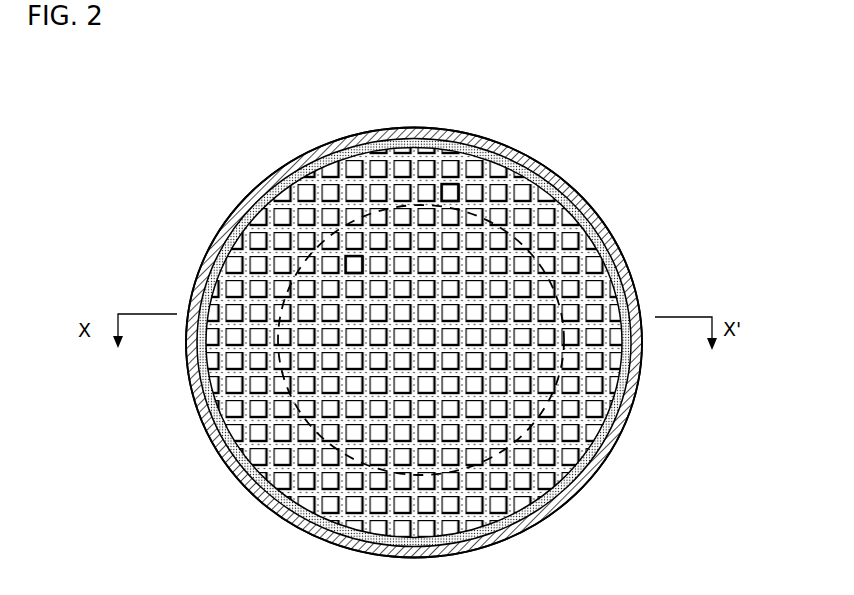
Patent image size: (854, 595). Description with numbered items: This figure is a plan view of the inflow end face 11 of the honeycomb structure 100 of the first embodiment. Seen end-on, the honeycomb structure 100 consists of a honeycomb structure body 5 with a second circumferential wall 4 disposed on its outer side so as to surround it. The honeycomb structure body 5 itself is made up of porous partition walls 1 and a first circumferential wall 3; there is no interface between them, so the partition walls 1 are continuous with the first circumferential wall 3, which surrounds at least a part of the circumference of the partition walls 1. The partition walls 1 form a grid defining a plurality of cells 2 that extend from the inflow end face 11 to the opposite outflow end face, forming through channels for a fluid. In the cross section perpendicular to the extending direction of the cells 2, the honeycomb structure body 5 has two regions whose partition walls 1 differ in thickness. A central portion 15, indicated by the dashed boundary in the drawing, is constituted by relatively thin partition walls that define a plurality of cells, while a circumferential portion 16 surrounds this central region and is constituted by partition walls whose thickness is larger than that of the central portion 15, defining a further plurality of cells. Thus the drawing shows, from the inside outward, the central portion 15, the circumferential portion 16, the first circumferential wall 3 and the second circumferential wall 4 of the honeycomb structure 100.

The honeycomb structure 100 is at (722, 62).
The inflow end face 11 is at (240, 173).
The partition walls 1 is at (390, 263).
The cells 2 is at (355, 265).
The first circumferential wall 3 is at (610, 227).
The second circumferential wall 4 is at (633, 266).
The honeycomb structure body 5 is at (585, 217).
The central portion 15 is at (377, 362).
The circumferential portion 16 is at (290, 463).